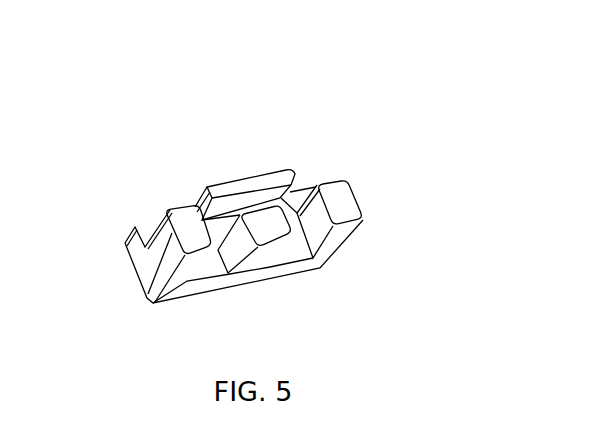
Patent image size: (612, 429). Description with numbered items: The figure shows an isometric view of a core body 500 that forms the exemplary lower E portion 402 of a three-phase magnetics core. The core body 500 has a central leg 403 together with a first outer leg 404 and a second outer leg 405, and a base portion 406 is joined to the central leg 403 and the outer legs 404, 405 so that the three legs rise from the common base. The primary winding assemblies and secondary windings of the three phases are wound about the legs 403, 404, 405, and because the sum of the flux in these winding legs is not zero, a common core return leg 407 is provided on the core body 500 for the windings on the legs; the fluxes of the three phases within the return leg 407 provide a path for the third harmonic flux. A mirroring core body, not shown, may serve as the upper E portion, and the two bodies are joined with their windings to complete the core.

The core body 500 is at (208, 98).
The lower E portion 402 is at (153, 304).
The central leg 403 is at (273, 252).
The first outer leg 404 is at (172, 238).
The second outer leg 405 is at (343, 208).
The base portion 406 is at (227, 285).
The common core return leg 407 is at (264, 180).